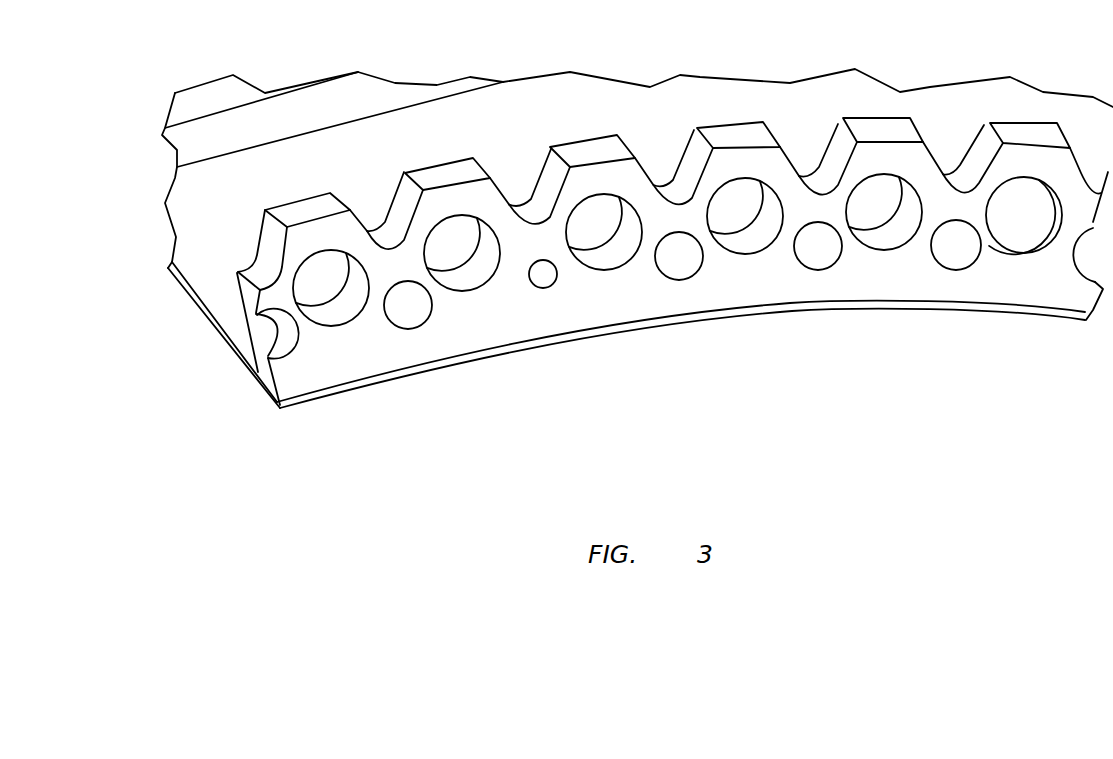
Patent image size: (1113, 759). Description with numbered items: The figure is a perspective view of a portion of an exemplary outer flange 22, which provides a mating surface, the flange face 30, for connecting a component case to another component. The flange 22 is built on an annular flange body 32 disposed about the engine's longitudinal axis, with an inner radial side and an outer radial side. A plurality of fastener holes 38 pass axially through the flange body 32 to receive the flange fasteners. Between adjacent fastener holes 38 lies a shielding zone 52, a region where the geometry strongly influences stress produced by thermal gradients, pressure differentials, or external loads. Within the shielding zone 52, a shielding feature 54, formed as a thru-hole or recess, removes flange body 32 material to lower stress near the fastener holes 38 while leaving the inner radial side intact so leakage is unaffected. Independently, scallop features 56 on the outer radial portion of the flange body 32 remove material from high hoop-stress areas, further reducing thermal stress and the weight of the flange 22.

The flange 22 is at (731, 367).
The flange face 30 is at (1035, 285).
The flange body 32 is at (895, 282).
The fastener holes 38 is at (306, 335).
The shielding zone 52 is at (379, 338).
The shielding feature 54 is at (413, 332).
The scallop features 56 is at (956, 147).